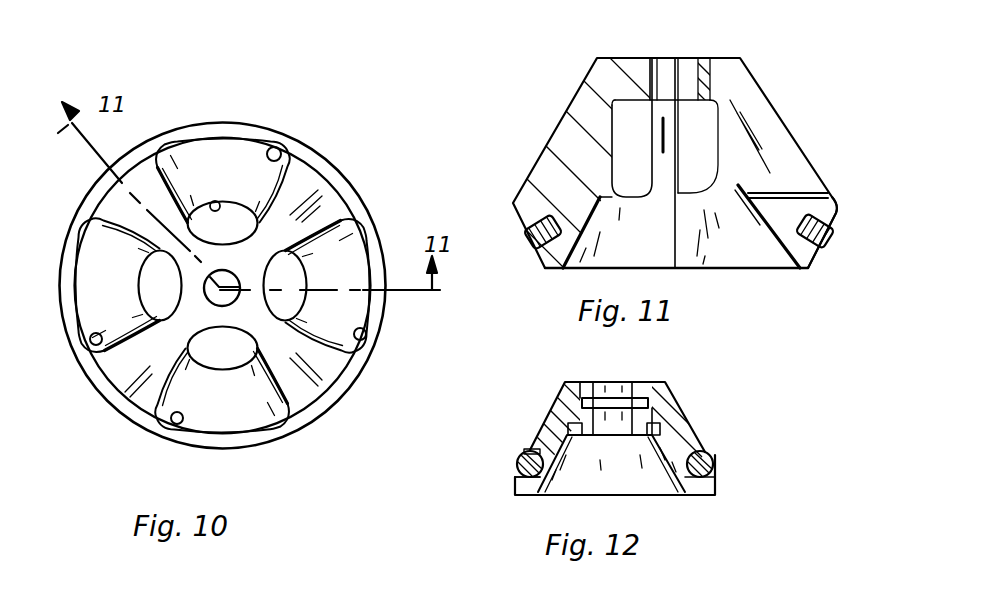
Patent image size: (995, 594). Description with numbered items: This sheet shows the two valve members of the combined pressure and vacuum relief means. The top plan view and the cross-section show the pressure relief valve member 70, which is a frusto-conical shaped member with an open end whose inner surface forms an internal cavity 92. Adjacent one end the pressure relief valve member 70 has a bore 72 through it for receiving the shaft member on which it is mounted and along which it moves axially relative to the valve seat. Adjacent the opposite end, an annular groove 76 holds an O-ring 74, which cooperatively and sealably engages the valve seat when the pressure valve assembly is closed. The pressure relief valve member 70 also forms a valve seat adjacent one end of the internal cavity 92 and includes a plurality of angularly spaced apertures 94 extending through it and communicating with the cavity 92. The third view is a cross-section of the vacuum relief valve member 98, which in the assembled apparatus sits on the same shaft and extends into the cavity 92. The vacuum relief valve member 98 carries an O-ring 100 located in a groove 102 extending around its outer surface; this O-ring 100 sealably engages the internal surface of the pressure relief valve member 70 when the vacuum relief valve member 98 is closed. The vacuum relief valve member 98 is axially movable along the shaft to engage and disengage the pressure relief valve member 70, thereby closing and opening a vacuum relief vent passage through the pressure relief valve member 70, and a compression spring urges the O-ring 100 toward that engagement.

In FIG. 10, the pressure relief valve member 70 is at (373, 206).
In FIG. 11, the pressure relief valve member 70 is at (788, 122).
In FIG. 10, the bore 72 is at (208, 300).
In FIG. 11, the bore 72 is at (651, 86).
In FIG. 11, the O-ring 74 is at (828, 240).
In FIG. 11, the annular groove 76 is at (833, 233).
In FIG. 10, the internal cavity 92 is at (221, 203).
In FIG. 11, the internal cavity 92 is at (777, 258).
In FIG. 10, the apertures 94 is at (275, 148).
In FIG. 11, the apertures 94 is at (786, 196).
In FIG. 12, the vacuum relief valve member 98 is at (702, 497).
In FIG. 12, the O-ring 100 is at (516, 480).
In FIG. 12, the groove 102 is at (516, 460).